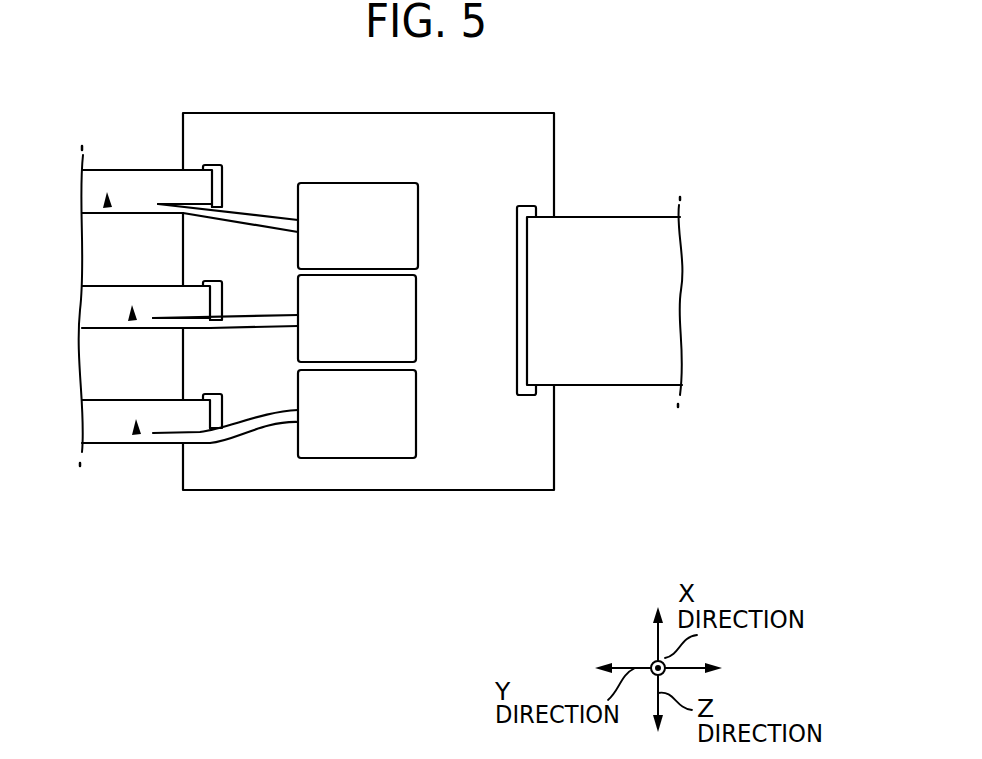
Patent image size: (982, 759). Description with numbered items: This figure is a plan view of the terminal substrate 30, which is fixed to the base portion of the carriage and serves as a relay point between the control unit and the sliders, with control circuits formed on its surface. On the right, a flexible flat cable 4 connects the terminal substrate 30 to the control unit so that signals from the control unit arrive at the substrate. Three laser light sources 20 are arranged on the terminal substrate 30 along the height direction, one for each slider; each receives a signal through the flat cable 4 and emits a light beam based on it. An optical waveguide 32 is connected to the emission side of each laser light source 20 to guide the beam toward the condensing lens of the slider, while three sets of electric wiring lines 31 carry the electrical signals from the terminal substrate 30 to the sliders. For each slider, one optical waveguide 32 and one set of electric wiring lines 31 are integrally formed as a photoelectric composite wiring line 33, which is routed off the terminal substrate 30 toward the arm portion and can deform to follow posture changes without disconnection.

The flexible flat cable 4 is at (613, 358).
The laser light source 20 is at (362, 422).
The terminal substrate 30 is at (357, 475).
The electric wiring line 31 is at (193, 417).
The optical waveguide 32 is at (243, 218).
The photoelectric composite wiring line 33 is at (107, 200).